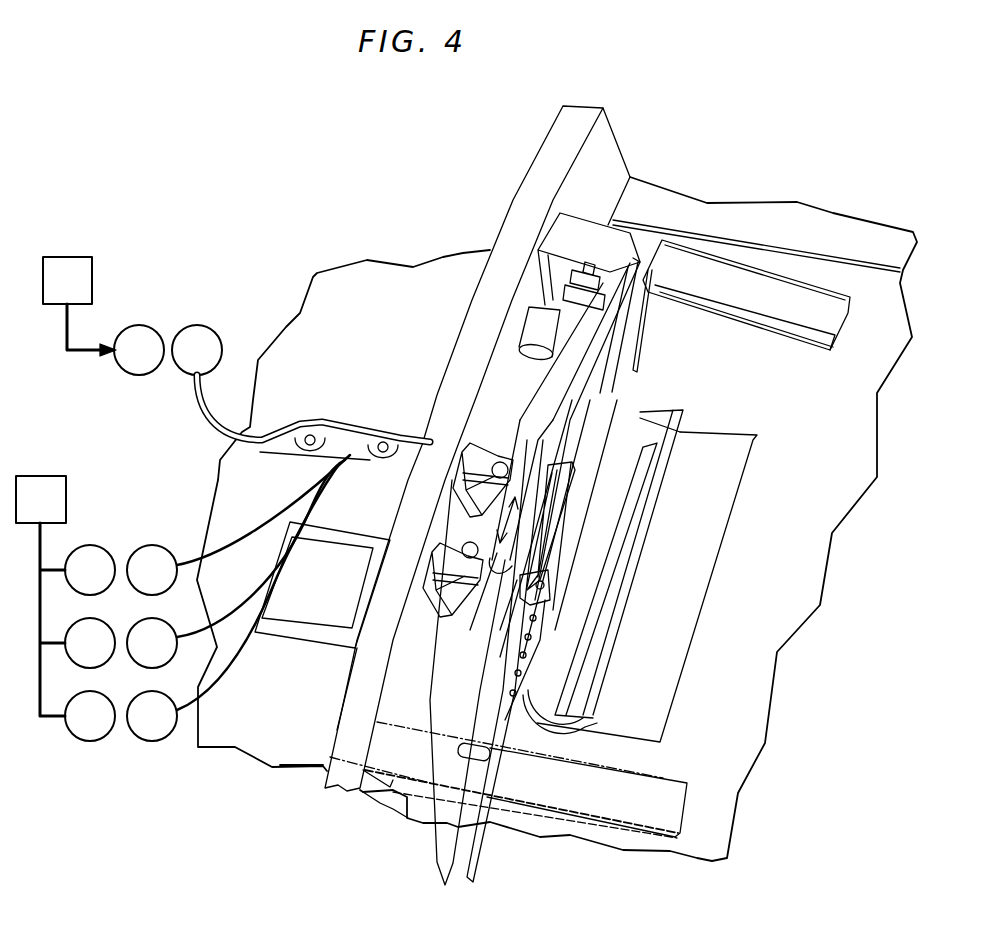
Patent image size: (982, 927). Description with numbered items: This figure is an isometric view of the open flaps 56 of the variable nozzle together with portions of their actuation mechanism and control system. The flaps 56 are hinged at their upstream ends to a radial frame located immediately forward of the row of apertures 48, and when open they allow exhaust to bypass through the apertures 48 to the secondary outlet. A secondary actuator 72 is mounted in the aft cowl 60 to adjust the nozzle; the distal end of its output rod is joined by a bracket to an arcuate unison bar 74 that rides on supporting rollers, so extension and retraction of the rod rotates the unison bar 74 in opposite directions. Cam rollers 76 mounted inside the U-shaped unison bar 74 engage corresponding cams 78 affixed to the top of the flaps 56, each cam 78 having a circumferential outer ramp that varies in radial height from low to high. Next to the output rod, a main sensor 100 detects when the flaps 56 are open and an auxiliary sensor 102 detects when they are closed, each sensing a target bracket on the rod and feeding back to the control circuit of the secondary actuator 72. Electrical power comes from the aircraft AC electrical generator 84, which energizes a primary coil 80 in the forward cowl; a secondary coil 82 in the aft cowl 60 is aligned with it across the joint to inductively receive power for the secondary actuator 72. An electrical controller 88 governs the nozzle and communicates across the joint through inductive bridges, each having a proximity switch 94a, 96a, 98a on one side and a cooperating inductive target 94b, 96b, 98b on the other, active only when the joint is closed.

The apertures 48 is at (663, 487).
The flaps 56 is at (642, 412).
The aft cowl 60 is at (301, 732).
The secondary actuator 72 is at (543, 410).
The unison bar 74 is at (575, 455).
The cam rollers 76 is at (540, 580).
The cams 78 is at (555, 508).
The primary coil 80 is at (151, 361).
The secondary coil 82 is at (209, 361).
The AC electrical generator 84 is at (92, 285).
The electrical controller 88 is at (52, 509).
The proximity switch 94a is at (168, 581).
The inductive target 94b is at (106, 581).
The proximity switch 96a is at (106, 727).
The inductive target 96b is at (168, 727).
The proximity switch 98a is at (106, 654).
The inductive target 98b is at (168, 654).
The main sensor 100 is at (470, 550).
The auxiliary sensor 102 is at (500, 470).